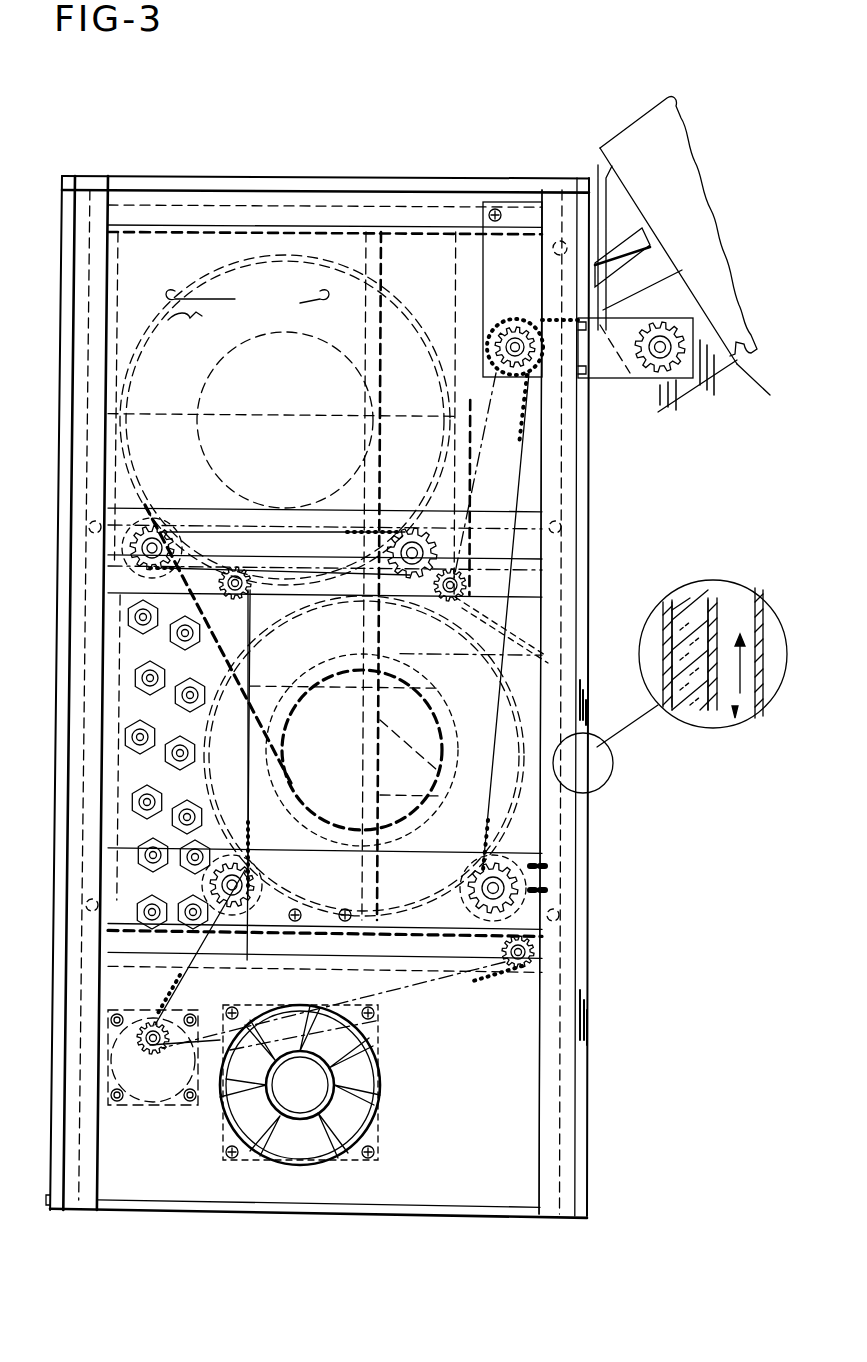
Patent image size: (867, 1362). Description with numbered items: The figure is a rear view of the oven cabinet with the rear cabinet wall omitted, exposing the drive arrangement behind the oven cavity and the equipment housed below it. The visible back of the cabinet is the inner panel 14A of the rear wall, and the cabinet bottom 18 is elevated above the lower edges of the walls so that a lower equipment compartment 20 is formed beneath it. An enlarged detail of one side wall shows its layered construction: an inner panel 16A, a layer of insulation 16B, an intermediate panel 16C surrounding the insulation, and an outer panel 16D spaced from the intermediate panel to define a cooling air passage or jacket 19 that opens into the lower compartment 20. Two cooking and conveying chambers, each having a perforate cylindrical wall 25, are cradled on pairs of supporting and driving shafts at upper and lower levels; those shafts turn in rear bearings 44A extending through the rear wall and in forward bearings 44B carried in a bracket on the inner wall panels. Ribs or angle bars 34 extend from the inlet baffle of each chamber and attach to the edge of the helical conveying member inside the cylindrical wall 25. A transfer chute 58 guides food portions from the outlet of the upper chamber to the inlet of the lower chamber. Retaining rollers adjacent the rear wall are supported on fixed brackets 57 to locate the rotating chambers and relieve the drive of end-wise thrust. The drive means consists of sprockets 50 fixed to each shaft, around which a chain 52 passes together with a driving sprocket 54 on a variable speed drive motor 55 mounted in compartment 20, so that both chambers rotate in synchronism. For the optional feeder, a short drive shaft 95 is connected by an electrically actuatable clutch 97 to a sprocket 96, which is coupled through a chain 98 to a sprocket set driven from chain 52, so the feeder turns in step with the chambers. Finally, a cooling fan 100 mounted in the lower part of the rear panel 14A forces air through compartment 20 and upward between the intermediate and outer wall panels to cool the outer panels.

The inner panel of rear wall 14A is at (470, 1092).
The inner panel of side wall 16A is at (663, 630).
The layer of insulation 16B is at (694, 706).
The intermediate panel 16C is at (720, 610).
The outer panel 16D is at (762, 626).
The bottom 18 is at (577, 972).
The cooling air passage or jacket 19 is at (737, 726).
The lower equipment compartment 20 is at (503, 1125).
The perforate cylindrical wall 25 is at (155, 320).
The ribs or angle bars 34 is at (456, 884).
The bearings 44A is at (165, 553).
The forward bearings 44B is at (238, 904).
The sprockets 50 is at (334, 544).
The chain 52 is at (480, 985).
The driving sprocket 54 is at (148, 1050).
The variable speed drive motor 55 is at (162, 1092).
The fixed brackets 57 is at (537, 869).
The transfer chute 58 is at (234, 748).
The short drive shaft 95 is at (657, 362).
The sprocket 96 is at (692, 382).
The electrically actuatable clutch 97 is at (515, 327).
The chain 98 is at (512, 348).
The cooling fan 100 is at (364, 1080).